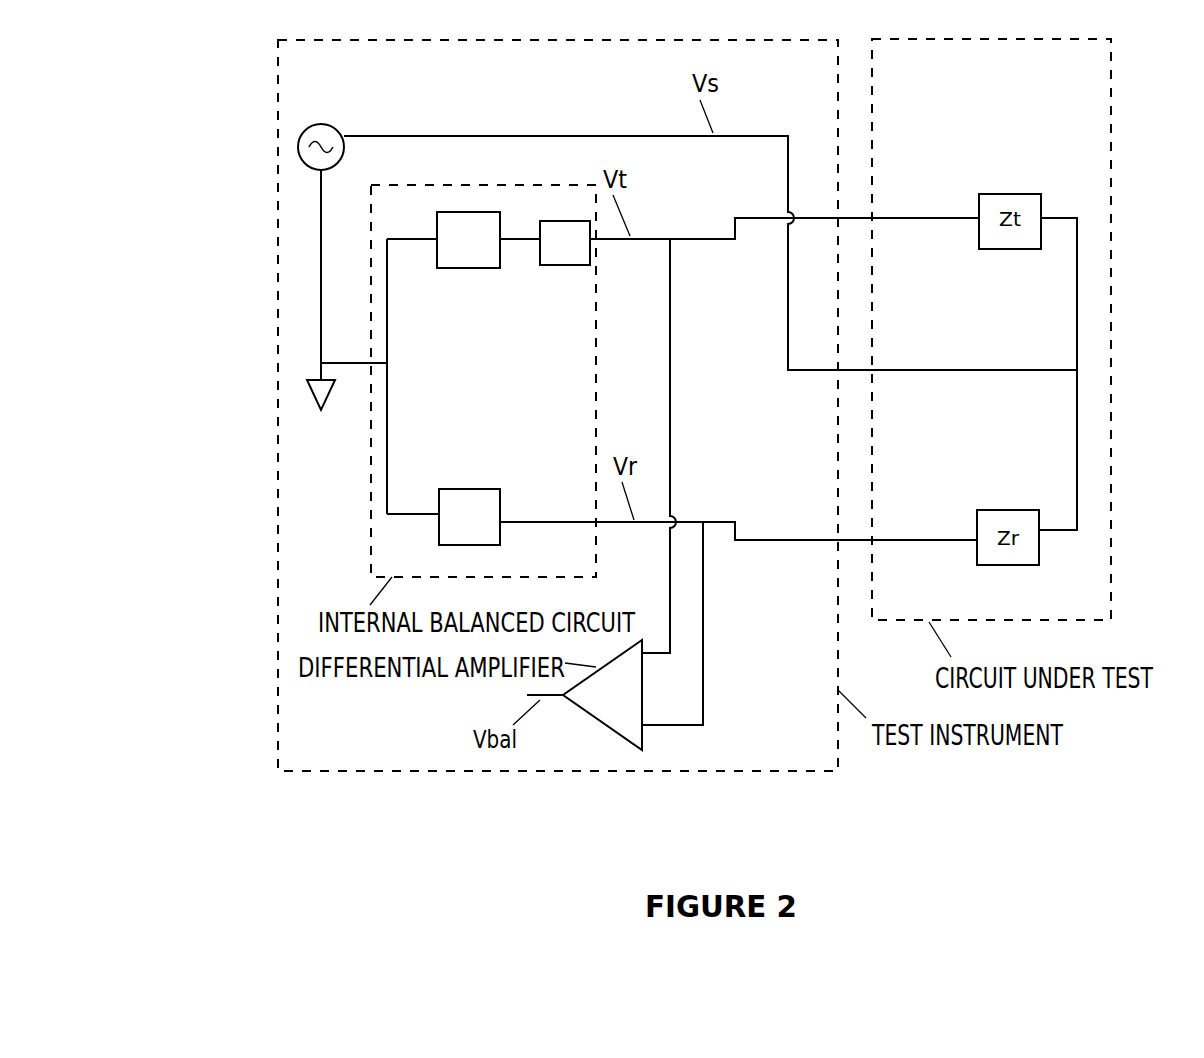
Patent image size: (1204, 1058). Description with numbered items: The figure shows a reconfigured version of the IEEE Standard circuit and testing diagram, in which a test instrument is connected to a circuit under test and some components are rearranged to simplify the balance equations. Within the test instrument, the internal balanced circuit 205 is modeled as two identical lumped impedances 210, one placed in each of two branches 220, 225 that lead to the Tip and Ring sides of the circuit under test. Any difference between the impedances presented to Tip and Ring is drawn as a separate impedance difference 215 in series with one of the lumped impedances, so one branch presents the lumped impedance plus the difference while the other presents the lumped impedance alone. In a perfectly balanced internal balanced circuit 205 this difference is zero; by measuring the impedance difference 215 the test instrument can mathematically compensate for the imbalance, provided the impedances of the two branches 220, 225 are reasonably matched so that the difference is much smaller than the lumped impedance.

The internal balanced circuit 205 is at (371, 530).
The lumped impedances 210 is at (460, 268).
The impedance difference dZb 215 is at (565, 265).
The first branch 220 is at (387, 239).
The second branch 225 is at (387, 514).